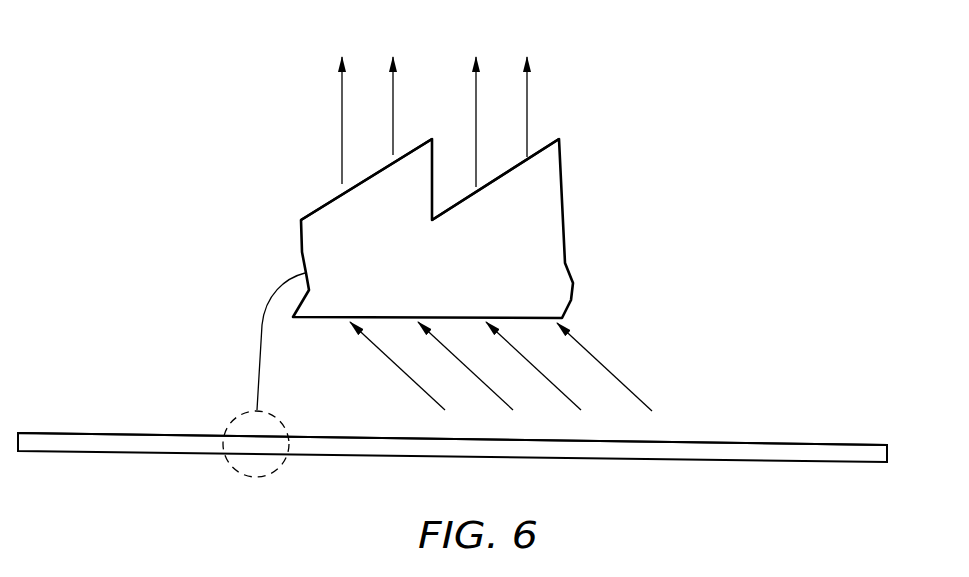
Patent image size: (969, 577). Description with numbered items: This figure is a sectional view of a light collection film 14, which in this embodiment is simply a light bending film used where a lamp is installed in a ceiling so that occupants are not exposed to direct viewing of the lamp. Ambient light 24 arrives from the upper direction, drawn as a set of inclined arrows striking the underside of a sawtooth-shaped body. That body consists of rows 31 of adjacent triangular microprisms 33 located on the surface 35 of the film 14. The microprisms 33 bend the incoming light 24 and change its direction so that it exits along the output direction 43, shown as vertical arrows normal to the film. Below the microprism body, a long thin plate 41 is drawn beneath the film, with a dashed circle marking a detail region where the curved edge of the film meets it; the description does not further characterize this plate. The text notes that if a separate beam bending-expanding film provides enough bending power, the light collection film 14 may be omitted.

The light collection film 14 is at (106, 290).
The ambient light 24 is at (511, 366).
The rows of microprisms 31 is at (391, 308).
The triangular microprisms 33 is at (427, 160).
The film surface 35 is at (452, 417).
The light guide plate 41 is at (452, 473).
The output direction 43 is at (479, 122).